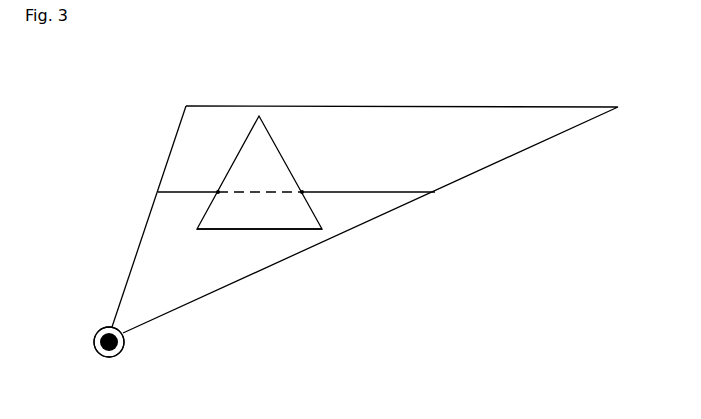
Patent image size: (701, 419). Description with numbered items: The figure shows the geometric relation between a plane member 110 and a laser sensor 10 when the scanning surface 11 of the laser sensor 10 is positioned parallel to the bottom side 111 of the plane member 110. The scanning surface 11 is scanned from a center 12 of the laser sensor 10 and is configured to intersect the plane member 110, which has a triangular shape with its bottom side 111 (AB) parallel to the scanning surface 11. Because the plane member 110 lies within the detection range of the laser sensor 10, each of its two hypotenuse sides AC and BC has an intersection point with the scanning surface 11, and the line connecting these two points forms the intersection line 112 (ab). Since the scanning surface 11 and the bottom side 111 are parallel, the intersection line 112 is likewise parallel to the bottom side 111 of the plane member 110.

The laser sensor 10 is at (125, 350).
The scanning surface 11 is at (388, 106).
The center 12 is at (95, 335).
The plane member 110 is at (287, 231).
The bottom side 111 is at (250, 232).
The intersection line 112 is at (244, 192).